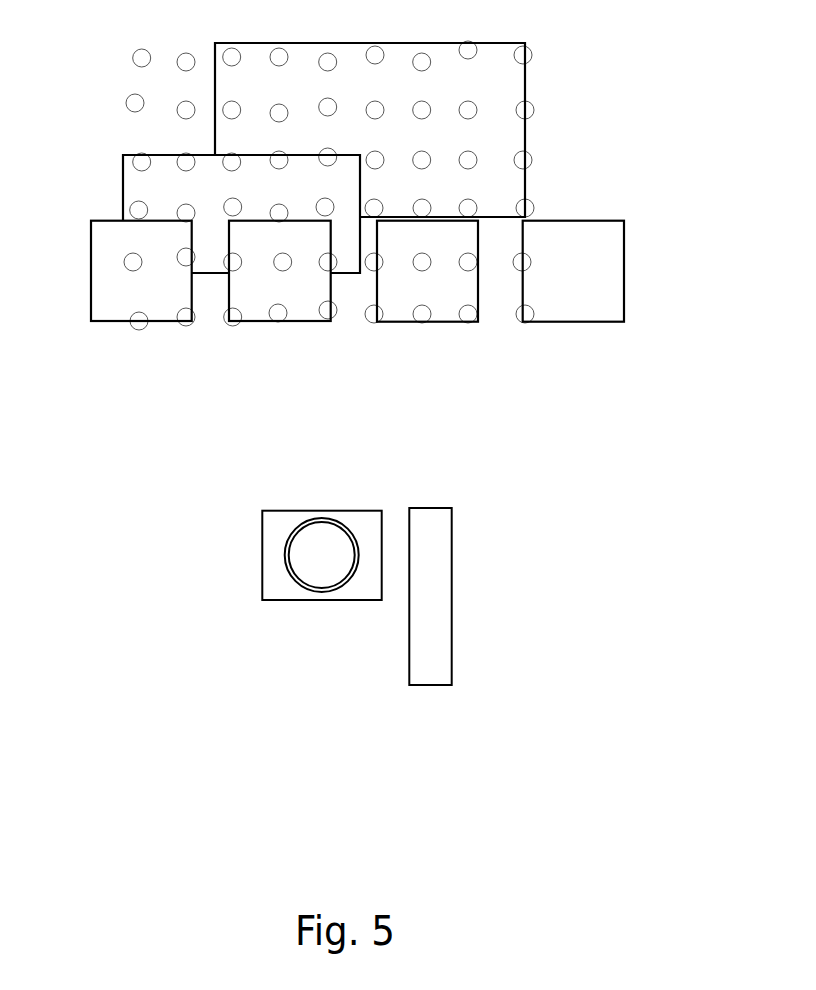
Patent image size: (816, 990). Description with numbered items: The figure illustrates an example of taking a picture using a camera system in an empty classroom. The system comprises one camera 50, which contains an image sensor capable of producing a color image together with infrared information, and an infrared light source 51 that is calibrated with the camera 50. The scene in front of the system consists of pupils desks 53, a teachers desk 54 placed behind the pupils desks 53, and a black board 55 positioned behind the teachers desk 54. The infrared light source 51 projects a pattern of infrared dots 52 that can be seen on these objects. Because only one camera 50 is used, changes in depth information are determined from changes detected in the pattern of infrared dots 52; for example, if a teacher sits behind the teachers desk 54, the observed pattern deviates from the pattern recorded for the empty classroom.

The camera 50 is at (322, 602).
The infrared light source 51 is at (428, 685).
The infrared dots 52 is at (372, 322).
The pupils desks 53 is at (625, 282).
The teachers desk 54 is at (123, 165).
The black board 55 is at (525, 148).